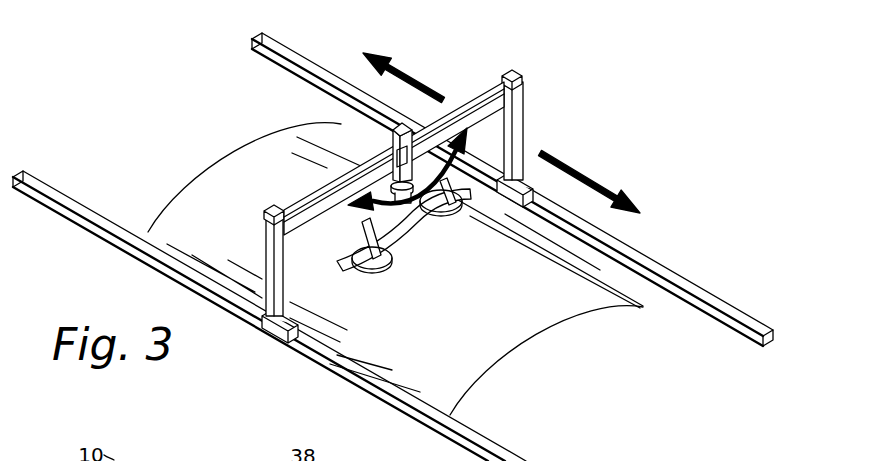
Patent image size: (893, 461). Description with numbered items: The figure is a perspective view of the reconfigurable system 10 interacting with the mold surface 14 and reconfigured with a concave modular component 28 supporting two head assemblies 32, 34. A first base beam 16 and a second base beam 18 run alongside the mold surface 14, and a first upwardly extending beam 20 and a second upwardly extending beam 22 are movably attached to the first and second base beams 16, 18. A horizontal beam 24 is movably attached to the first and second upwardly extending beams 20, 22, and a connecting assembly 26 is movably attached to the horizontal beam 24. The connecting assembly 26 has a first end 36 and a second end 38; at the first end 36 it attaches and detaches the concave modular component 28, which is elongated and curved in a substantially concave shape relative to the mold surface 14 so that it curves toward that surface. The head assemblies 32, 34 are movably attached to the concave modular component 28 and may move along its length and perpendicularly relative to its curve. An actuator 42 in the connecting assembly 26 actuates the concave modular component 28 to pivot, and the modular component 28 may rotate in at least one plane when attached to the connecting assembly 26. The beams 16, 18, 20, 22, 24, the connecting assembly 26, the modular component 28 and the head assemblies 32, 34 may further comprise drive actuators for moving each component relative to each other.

The reconfigurable system 10 is at (647, 73).
The mold surface 14 is at (497, 301).
The first base beam 16 is at (513, 460).
The second base beam 18 is at (734, 314).
The first upwardly extending beam 20 is at (266, 257).
The second upwardly extending beam 22 is at (521, 116).
The horizontal beam 24 is at (394, 128).
The connecting assembly 26 is at (393, 137).
The concave modular component 28 is at (393, 220).
The head assembly 32 is at (372, 269).
The head assembly 34 is at (463, 213).
The first end 36 is at (372, 180).
The second end 38 is at (395, 108).
The actuator 42 is at (424, 165).